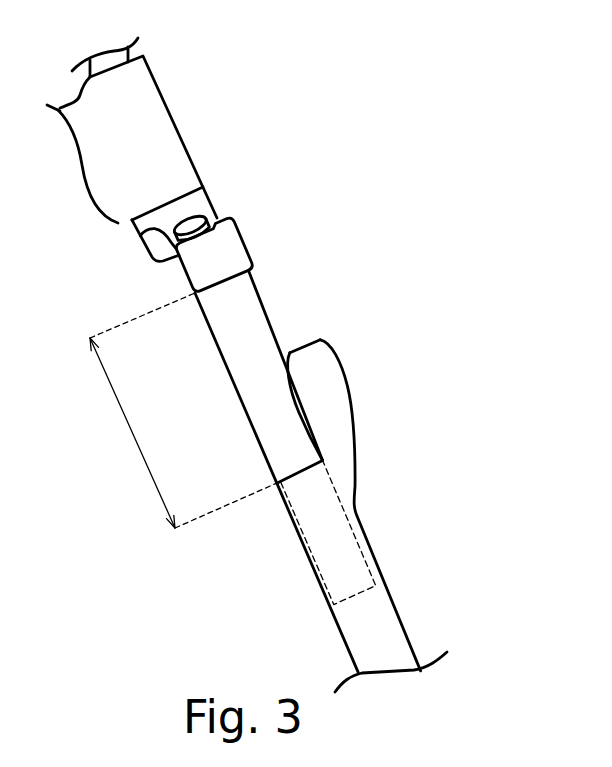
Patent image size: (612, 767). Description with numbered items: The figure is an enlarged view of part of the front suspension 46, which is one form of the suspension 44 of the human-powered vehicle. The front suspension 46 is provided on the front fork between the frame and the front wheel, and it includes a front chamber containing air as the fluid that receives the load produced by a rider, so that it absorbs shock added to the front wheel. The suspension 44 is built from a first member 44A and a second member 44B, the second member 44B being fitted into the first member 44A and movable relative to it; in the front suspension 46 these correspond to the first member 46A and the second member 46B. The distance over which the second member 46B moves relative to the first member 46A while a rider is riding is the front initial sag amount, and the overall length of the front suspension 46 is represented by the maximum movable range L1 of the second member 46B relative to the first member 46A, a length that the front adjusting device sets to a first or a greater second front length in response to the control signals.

The front suspension 46 is at (282, 366).
The suspension 44 is at (282, 366).
The first member 46A is at (341, 515).
The first member 44A is at (305, 551).
The second member 46B is at (235, 376).
The second member 44B is at (225, 360).
The maximum movable range L1 is at (134, 437).